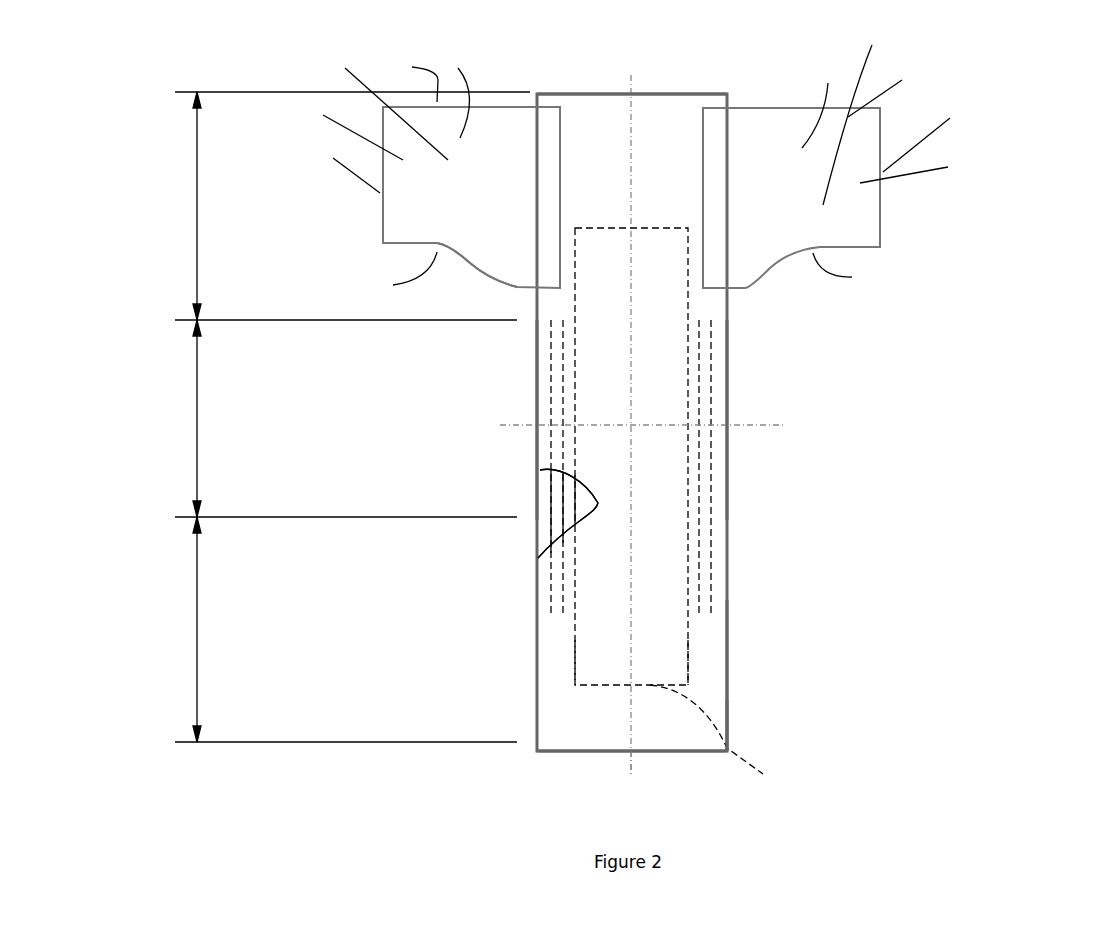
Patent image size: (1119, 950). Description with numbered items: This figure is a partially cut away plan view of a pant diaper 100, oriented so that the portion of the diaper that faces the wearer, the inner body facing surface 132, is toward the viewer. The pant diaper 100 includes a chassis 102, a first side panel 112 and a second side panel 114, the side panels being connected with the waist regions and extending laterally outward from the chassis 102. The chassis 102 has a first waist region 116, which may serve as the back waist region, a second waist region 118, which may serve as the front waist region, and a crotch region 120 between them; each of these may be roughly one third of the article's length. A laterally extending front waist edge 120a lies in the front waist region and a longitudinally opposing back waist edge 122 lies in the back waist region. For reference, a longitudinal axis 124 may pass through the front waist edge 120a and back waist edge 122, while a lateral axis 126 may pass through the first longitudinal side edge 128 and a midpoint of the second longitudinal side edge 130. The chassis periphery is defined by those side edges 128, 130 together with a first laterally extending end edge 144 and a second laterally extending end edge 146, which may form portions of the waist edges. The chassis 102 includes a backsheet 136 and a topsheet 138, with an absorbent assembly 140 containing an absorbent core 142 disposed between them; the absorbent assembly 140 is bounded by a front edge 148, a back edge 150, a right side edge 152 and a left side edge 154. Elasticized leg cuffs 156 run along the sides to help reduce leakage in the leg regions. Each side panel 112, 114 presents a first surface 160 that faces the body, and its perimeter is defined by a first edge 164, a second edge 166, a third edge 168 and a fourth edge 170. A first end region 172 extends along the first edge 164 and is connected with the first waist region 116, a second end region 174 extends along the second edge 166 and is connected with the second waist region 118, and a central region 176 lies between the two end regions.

The pant diaper 100 is at (945, 338).
The chassis 102 is at (700, 709).
The first side panel 112 is at (757, 150).
The second side panel 114 is at (505, 148).
The first waist region 116 is at (342, 206).
The second waist region 118 is at (335, 629).
The crotch region 120 is at (335, 418).
The front waist edge 120a is at (575, 752).
The back waist edge 122 is at (585, 92).
The longitudinal axis 124 is at (630, 765).
The lateral axis 126 is at (769, 425).
The first longitudinal side edge 128 is at (721, 446).
The second longitudinal side edge 130 is at (537, 354).
The inner, body facing surface 132 is at (710, 732).
The backsheet 136 is at (543, 513).
The topsheet 138 is at (710, 675).
The absorbent assembly 140 is at (585, 503).
The absorbent core 142 is at (461, 572).
The first laterally extending end edge 144 is at (653, 92).
The second laterally extending end edge 146 is at (665, 753).
The front edge 148 is at (725, 740).
The back edge 150 is at (612, 228).
The right side edge 152 is at (690, 650).
The left side edge 154 is at (575, 640).
The elasticized leg cuffs 156 is at (551, 480).
The first surface 160 is at (636, 95).
The first edge 164 is at (563, 230).
The second edge 166 is at (636, 147).
The third edge 168 is at (643, 118).
The fourth edge 170 is at (619, 277).
The first end region 172 is at (552, 263).
The second end region 174 is at (630, 147).
The central region 176 is at (618, 106).